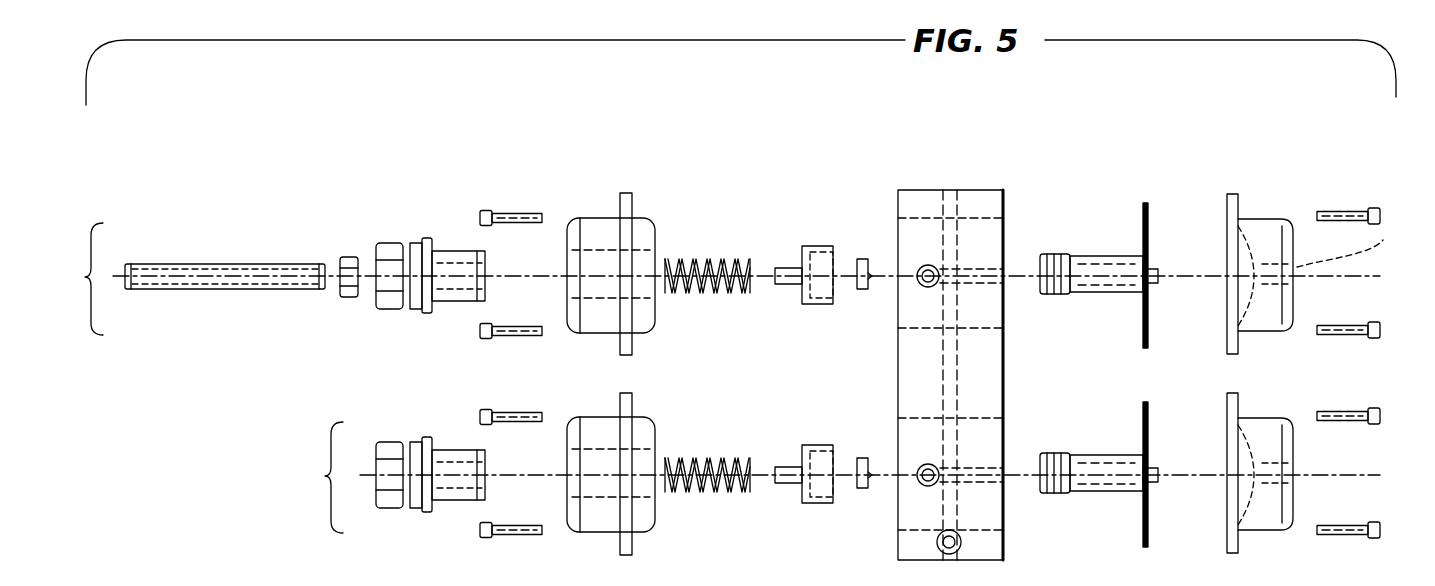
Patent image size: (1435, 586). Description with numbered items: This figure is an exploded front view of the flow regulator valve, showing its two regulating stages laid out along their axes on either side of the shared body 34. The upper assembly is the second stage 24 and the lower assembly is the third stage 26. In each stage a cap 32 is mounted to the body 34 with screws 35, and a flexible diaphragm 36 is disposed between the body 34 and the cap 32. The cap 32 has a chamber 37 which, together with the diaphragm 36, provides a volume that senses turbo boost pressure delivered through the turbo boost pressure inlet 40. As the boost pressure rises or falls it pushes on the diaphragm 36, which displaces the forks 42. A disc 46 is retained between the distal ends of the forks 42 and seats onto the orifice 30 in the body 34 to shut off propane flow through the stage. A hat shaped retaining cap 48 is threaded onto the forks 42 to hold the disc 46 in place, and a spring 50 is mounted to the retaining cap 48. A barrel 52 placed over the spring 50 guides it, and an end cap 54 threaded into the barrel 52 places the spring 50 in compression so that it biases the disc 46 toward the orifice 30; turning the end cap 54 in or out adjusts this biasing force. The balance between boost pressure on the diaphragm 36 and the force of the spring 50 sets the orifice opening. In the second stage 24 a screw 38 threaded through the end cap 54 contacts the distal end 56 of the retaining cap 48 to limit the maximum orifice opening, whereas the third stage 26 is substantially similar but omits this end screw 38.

The second stage 24 is at (88, 279).
The third stage 26 is at (328, 477).
The orifice 30 is at (926, 265).
The cap 32 is at (1242, 346).
The body 34 is at (945, 343).
The screws 35 is at (1345, 210).
The flexible diaphragm 36 is at (1146, 212).
The chamber 37 is at (1228, 245).
The screw 38 is at (214, 265).
The turbo boost pressure inlet 40 is at (1383, 240).
The forks 42 is at (1092, 258).
The disc 46 is at (866, 258).
The hat shaped retaining cap 48 is at (837, 246).
The spring 50 is at (750, 258).
The barrel 52 is at (585, 218).
The end cap 54 is at (483, 240).
The distal end 56 is at (775, 268).